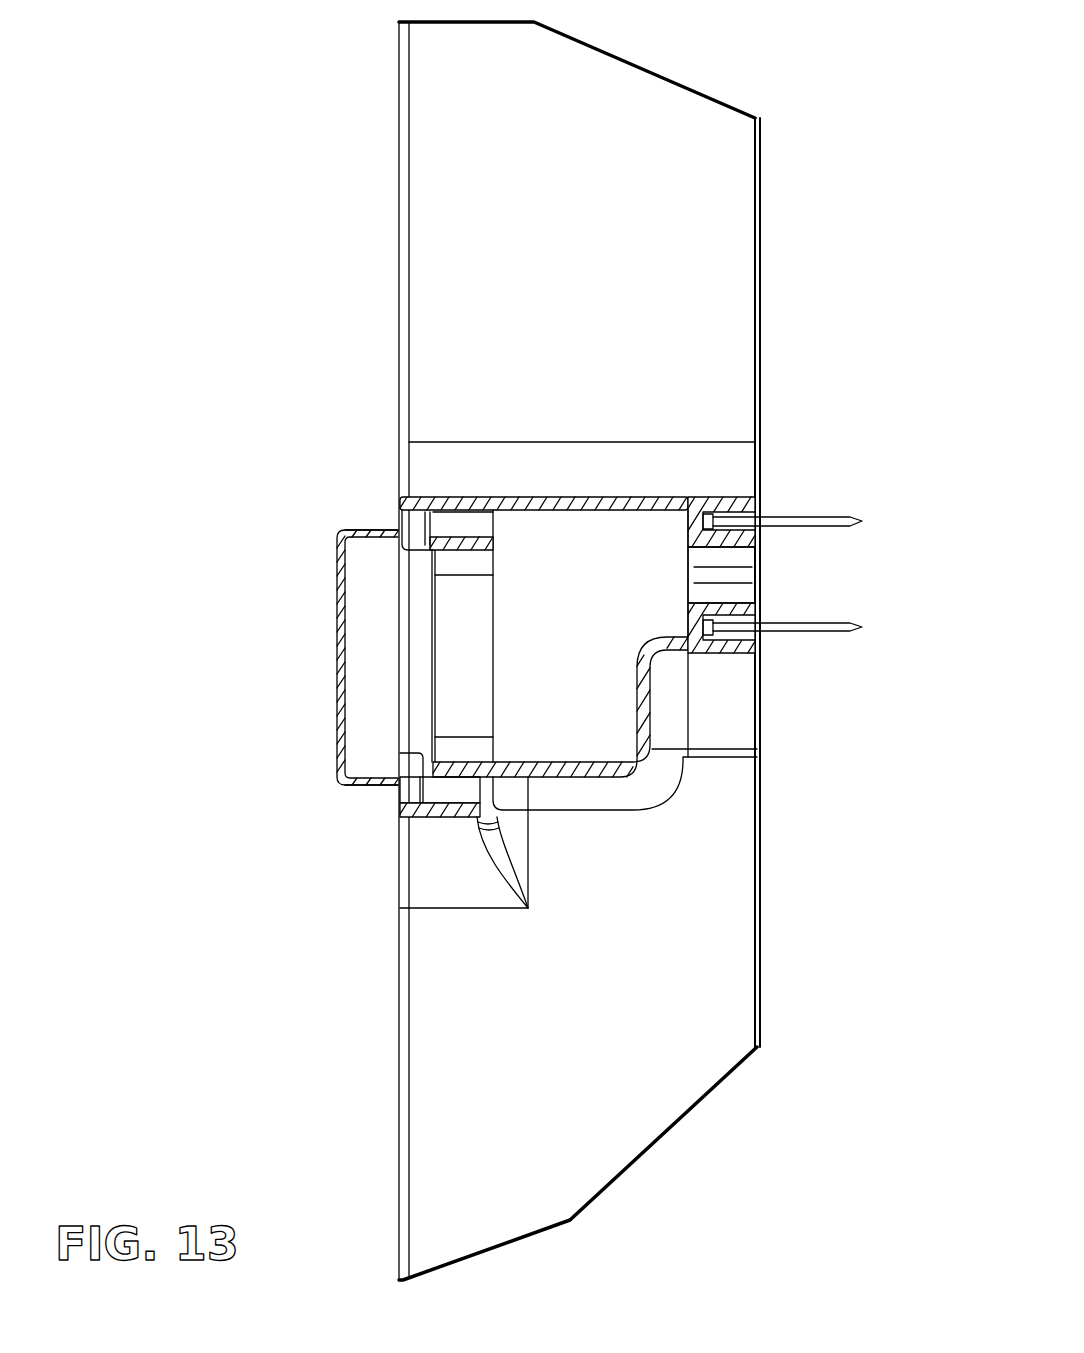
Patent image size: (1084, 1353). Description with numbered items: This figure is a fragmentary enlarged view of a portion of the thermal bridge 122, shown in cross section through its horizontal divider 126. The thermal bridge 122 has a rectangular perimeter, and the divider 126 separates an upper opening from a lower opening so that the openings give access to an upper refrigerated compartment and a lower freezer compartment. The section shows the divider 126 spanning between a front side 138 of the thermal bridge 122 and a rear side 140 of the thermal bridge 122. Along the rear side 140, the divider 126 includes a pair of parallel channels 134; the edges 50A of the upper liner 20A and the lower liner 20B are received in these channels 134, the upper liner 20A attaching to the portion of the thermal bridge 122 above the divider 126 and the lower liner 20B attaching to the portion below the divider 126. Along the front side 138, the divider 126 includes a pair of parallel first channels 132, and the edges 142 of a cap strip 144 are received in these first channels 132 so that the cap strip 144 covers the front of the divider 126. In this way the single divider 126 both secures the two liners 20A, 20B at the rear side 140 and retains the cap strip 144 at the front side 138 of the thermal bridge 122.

The thermal bridge 122 is at (765, 238).
The front side 138 is at (399, 333).
The rear side 140 is at (757, 353).
The edges 50A is at (690, 523).
The channels 134 is at (738, 518).
The upper liner 20A is at (808, 520).
The lower liner 20B is at (838, 628).
The divider 126 is at (770, 573).
The first channels 132 is at (415, 527).
The edges 142 is at (395, 530).
The cap strip 144 is at (337, 635).